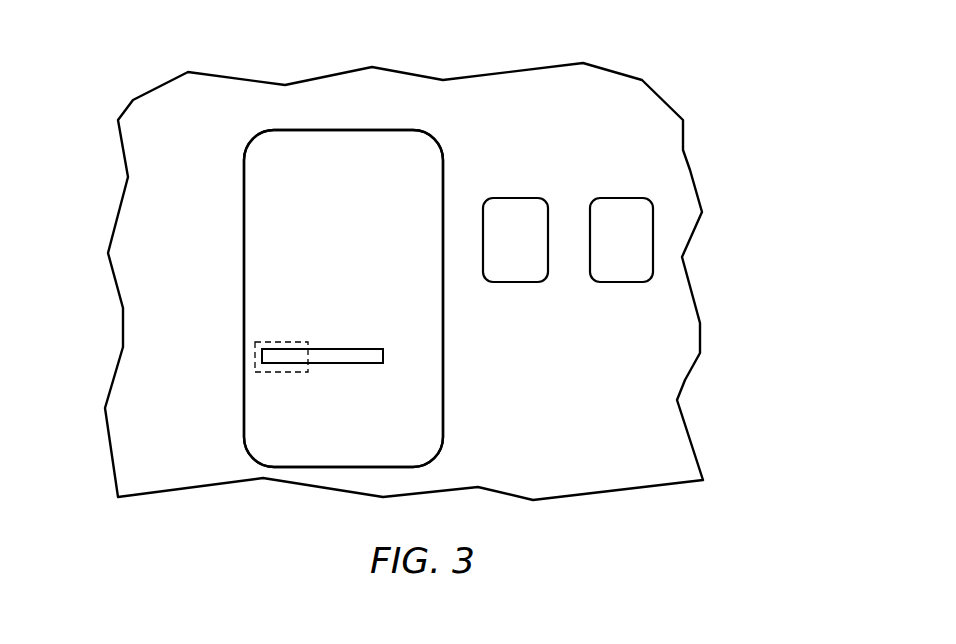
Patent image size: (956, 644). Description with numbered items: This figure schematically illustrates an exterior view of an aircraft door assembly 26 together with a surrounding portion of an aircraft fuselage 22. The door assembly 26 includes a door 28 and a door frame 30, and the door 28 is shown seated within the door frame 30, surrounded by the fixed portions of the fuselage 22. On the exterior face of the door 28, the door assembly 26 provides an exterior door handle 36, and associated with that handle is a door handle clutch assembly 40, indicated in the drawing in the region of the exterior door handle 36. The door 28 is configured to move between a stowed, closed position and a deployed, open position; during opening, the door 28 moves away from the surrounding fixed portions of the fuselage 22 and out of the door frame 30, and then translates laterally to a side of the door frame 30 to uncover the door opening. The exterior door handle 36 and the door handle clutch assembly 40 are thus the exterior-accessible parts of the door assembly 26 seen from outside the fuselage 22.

The fuselage 22 is at (637, 133).
The door assembly 26 is at (452, 118).
The door 28 is at (420, 303).
The door frame 30 is at (343, 130).
The exterior door handle 36 is at (287, 355).
The door handle clutch assembly 40 is at (280, 342).